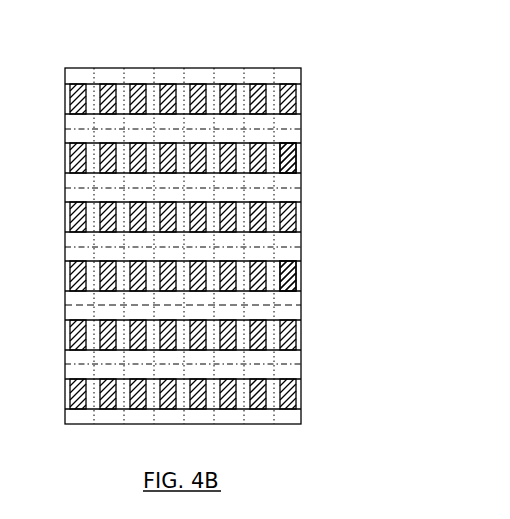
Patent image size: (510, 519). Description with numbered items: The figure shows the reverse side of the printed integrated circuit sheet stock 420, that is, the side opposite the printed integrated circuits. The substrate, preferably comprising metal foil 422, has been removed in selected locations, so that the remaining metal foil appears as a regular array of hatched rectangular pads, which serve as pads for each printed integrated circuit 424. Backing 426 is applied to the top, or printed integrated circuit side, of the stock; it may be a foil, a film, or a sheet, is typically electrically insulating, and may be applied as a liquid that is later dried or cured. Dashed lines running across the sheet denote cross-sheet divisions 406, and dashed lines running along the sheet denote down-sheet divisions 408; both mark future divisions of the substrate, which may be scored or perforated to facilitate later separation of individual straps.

The light field display / panel 420 is at (191, 218).
The metal foil 422 is at (282, 75).
The printed integrated circuit 424 is at (268, 161).
The backing 426 is at (273, 217).
The down-sheet divisions 408 is at (270, 282).
The cross-sheet divisions 406 is at (255, 305).